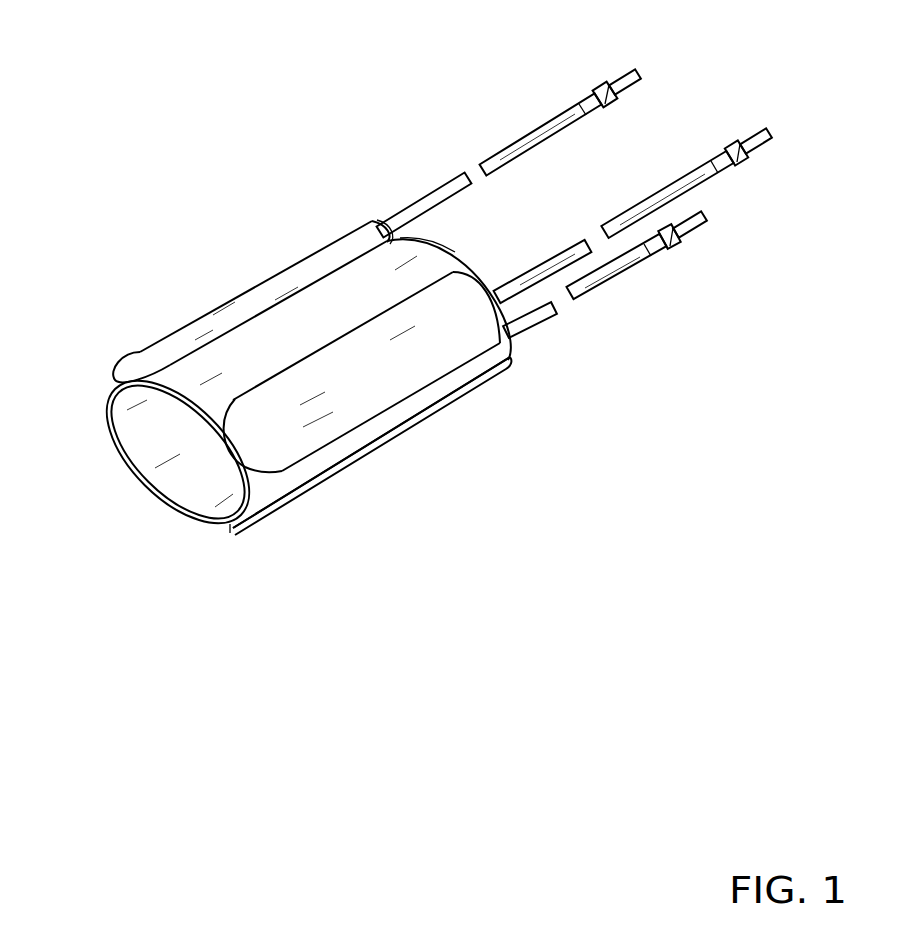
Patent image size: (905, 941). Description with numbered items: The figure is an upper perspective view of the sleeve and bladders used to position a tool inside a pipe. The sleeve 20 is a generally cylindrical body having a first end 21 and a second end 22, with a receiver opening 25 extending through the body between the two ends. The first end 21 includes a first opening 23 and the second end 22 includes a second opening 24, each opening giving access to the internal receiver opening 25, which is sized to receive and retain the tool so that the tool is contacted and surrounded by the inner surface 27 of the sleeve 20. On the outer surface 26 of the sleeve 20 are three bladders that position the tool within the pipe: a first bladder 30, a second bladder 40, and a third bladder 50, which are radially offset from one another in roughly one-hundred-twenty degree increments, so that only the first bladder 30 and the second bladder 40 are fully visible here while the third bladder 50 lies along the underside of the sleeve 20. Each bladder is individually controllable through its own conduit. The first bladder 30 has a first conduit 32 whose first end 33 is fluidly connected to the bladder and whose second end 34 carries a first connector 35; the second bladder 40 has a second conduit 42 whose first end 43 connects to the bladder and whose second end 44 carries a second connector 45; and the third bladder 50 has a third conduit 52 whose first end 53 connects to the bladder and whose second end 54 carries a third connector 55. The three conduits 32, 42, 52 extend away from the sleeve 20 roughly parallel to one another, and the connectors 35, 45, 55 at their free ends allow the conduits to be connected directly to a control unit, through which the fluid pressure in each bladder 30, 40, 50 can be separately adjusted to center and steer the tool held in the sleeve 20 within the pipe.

The sleeve 20 is at (332, 308).
The first end 21 is at (413, 250).
The second end 22 is at (118, 447).
The first opening 23 is at (445, 253).
The second opening 24 is at (110, 437).
The receiver opening 25 is at (198, 472).
The outer surface 26 is at (347, 445).
The inner surface 27 is at (203, 496).
The first bladder 30 is at (390, 380).
The first conduit 32 is at (637, 217).
The first end of first conduit 33 is at (503, 282).
The second end of first conduit 34 is at (769, 135).
The first connector 35 is at (728, 160).
The second bladder 40 is at (184, 332).
The second conduit 42 is at (516, 146).
The first end of second conduit 43 is at (378, 224).
The second end of second conduit 44 is at (631, 74).
The second connector 45 is at (590, 99).
The third bladder 50 is at (280, 503).
The third conduit 52 is at (600, 292).
The first end of third conduit 53 is at (520, 333).
The second end of third conduit 54 is at (702, 214).
The third connector 55 is at (672, 247).